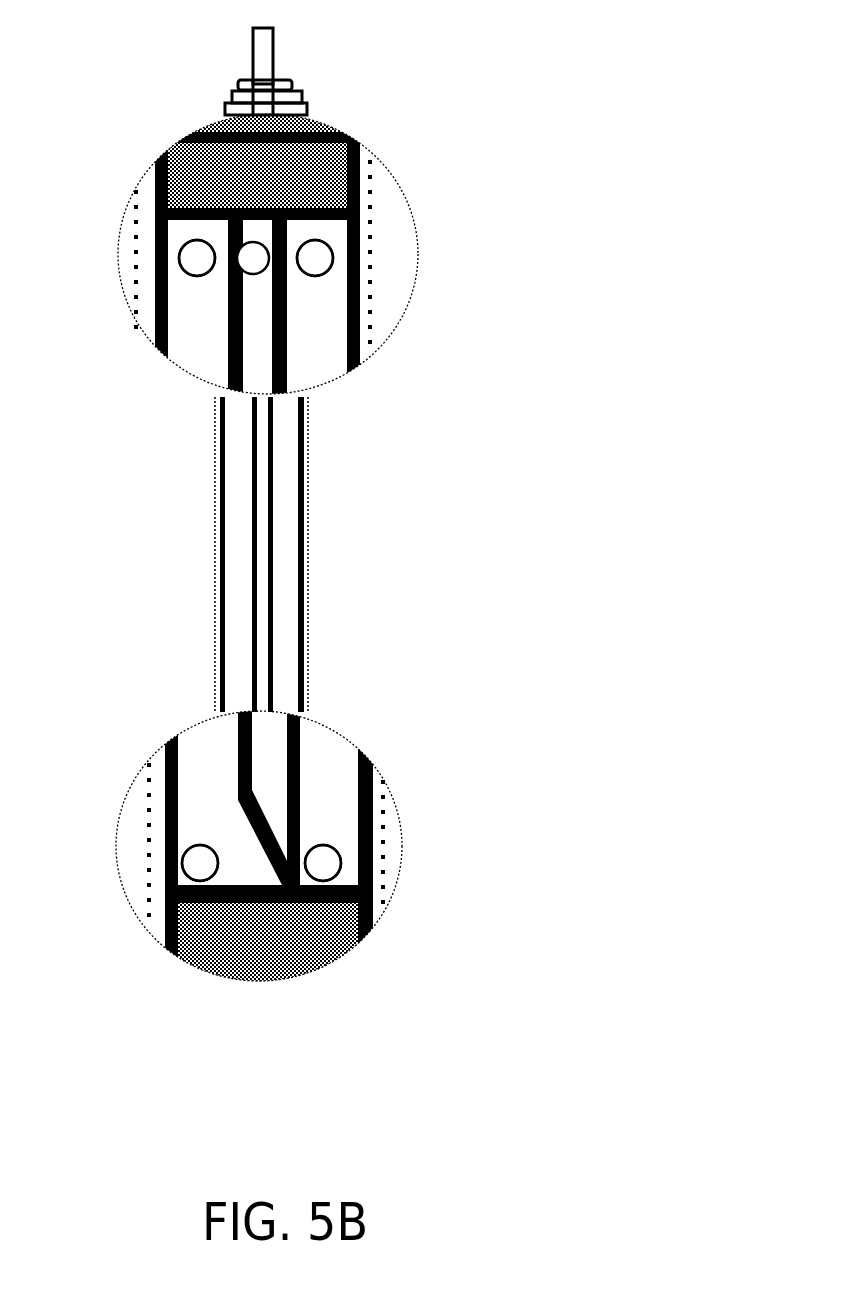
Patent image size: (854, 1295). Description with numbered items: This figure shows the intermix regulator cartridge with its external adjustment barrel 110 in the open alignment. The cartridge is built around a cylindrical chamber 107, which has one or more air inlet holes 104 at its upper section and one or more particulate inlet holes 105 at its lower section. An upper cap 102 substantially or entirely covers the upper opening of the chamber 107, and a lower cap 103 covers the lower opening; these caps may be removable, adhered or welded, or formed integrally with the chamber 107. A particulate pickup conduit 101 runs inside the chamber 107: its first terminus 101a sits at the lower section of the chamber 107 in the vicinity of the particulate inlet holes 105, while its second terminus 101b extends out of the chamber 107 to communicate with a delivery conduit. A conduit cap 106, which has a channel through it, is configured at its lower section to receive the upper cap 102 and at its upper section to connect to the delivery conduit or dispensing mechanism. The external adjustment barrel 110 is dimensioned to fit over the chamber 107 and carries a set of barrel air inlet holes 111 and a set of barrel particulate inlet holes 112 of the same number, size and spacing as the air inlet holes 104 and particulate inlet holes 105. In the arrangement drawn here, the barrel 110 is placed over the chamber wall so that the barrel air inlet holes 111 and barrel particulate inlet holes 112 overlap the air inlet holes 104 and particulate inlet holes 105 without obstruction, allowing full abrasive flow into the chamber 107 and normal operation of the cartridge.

The particulate pickup conduit 101 is at (248, 519).
The first terminus 101a is at (252, 815).
The second terminus 101b is at (255, 31).
The upper cap 102 is at (172, 152).
The lower cap 103 is at (197, 970).
The air inlet holes 104 is at (180, 248).
The particulate inlet holes 105 is at (182, 855).
The conduit cap 106 is at (307, 115).
The chamber 107 is at (310, 465).
The external adjustment barrel 110 is at (135, 322).
The barrel air inlet holes 111 is at (178, 263).
The barrel particulate inlet holes 112 is at (187, 882).